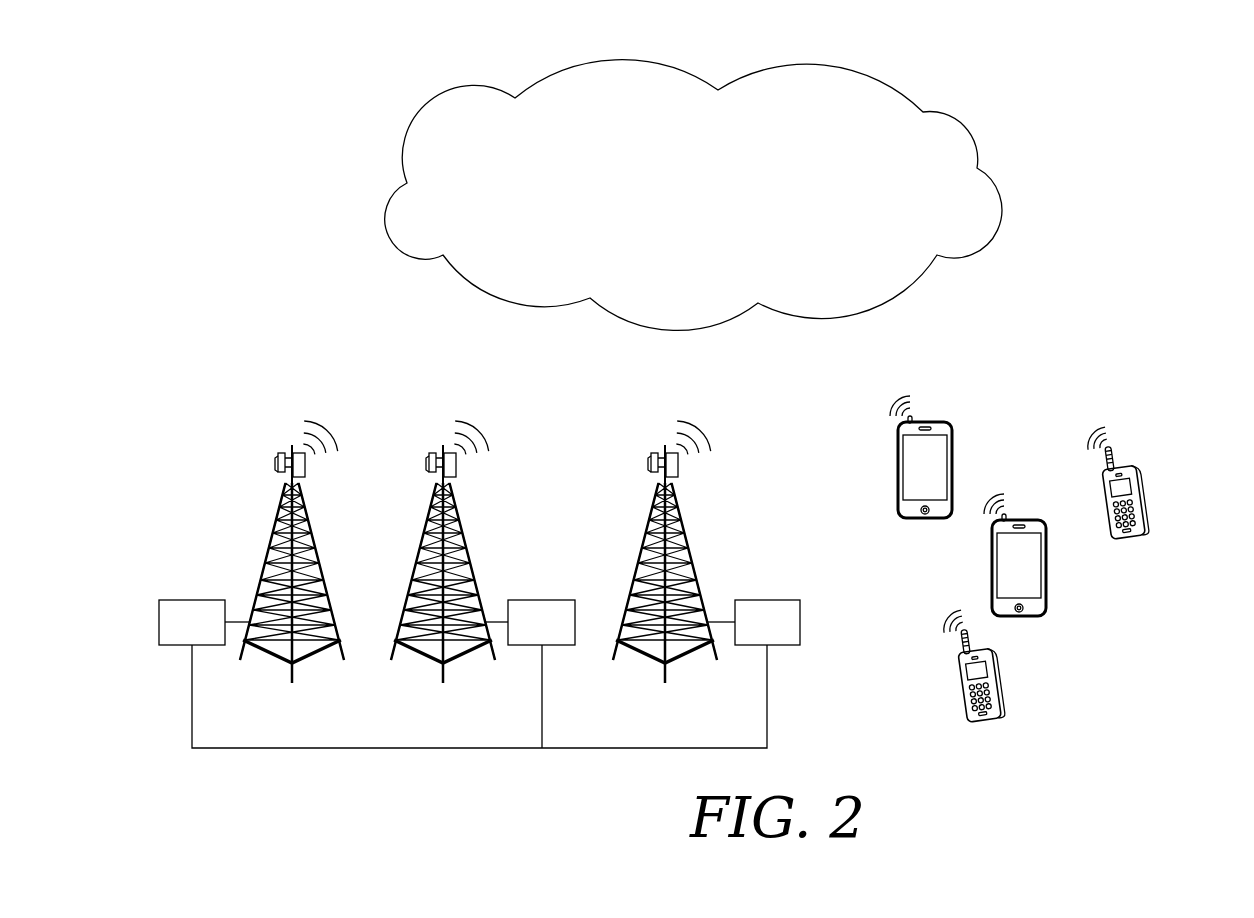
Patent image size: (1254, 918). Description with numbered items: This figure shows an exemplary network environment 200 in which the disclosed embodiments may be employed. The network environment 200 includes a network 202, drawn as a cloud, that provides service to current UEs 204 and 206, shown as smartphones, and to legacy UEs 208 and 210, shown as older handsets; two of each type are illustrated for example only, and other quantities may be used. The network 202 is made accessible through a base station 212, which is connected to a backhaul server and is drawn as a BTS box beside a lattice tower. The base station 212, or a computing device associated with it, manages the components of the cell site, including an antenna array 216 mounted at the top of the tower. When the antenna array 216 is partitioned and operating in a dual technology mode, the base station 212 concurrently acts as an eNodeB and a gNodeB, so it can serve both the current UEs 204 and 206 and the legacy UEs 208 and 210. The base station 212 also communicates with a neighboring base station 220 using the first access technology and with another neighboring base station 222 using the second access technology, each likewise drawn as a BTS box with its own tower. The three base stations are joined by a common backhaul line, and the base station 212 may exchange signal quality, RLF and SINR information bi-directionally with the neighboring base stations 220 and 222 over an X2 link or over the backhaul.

The network environment 200 is at (170, 147).
The network 202 is at (673, 207).
The current UE 204 is at (954, 463).
The current UE 206 is at (1047, 566).
The legacy UE 208 is at (1003, 683).
The legacy UE 210 is at (1147, 502).
The base station 212 is at (765, 600).
The antenna array 216 is at (680, 463).
The neighboring base station 220 is at (542, 600).
The neighboring base station 222 is at (192, 600).